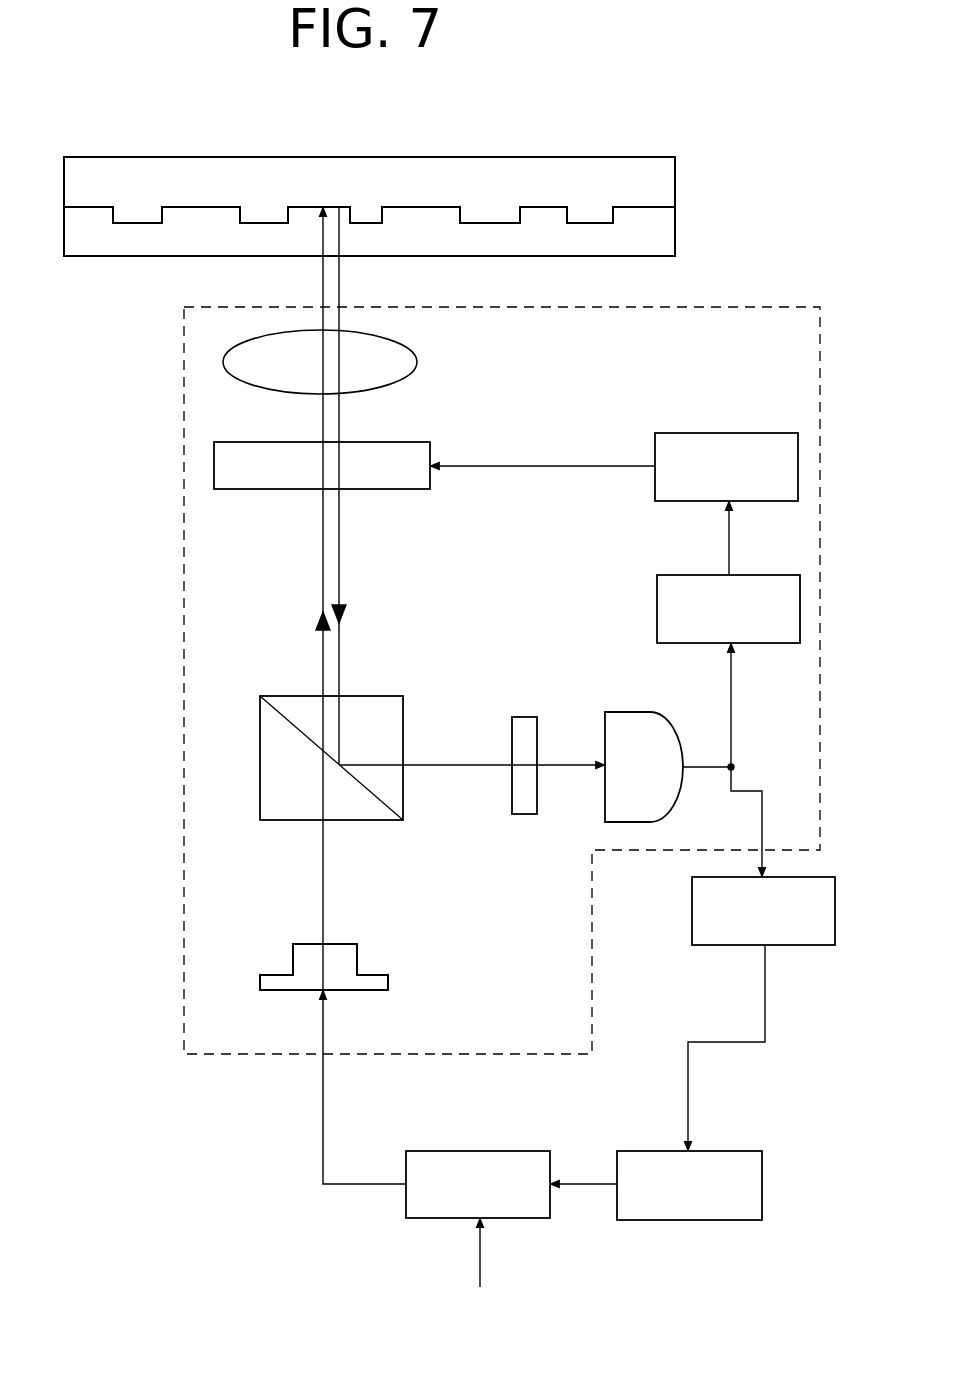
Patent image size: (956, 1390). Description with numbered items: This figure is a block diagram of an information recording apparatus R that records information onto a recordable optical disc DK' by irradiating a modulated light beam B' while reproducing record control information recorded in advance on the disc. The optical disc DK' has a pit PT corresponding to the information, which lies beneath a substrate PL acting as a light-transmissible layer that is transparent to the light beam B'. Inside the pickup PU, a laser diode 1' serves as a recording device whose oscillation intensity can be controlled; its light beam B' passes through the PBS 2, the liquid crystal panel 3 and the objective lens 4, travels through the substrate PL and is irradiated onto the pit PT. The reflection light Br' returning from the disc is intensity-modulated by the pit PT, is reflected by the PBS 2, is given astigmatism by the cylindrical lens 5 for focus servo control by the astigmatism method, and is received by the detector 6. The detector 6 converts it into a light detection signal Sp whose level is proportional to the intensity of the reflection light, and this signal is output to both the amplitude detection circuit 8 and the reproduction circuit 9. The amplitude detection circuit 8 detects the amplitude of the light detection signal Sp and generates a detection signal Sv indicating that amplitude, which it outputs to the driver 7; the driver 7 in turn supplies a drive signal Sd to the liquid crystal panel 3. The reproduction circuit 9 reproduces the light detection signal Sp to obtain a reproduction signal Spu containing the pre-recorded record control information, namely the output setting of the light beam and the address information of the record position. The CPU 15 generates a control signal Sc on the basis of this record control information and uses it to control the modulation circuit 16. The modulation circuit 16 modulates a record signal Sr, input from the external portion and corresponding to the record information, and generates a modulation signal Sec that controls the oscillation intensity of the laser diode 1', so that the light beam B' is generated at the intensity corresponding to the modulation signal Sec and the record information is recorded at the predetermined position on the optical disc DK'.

The laser diode 1' is at (332, 957).
The PBS 2 is at (391, 696).
The liquid crystal panel 3 is at (418, 489).
The objective lens 4 is at (413, 355).
The cylindrical lens 5 is at (508, 806).
The detector 6 is at (622, 712).
The driver 7 is at (770, 433).
The amplitude detection circuit 8 is at (770, 575).
The reproduction circuit 9 is at (763, 941).
The CPU 15 is at (743, 1151).
The modulation circuit 16 is at (428, 1218).
The optical disc DK' is at (405, 206).
The substrate PL is at (675, 238).
The pit PT is at (592, 222).
The pickup PU is at (398, 1058).
The light beam B' is at (305, 598).
The reflection light Br' is at (468, 486).
The drive signal Sd is at (561, 466).
The detection signal Sv is at (728, 537).
The light detection signal Sp is at (705, 770).
The reproduction signal Spu is at (763, 992).
The modulation signal Sec is at (360, 1184).
The control signal Sc is at (586, 1184).
The record signal Sr is at (480, 1258).
The information recording apparatus R is at (660, 1243).